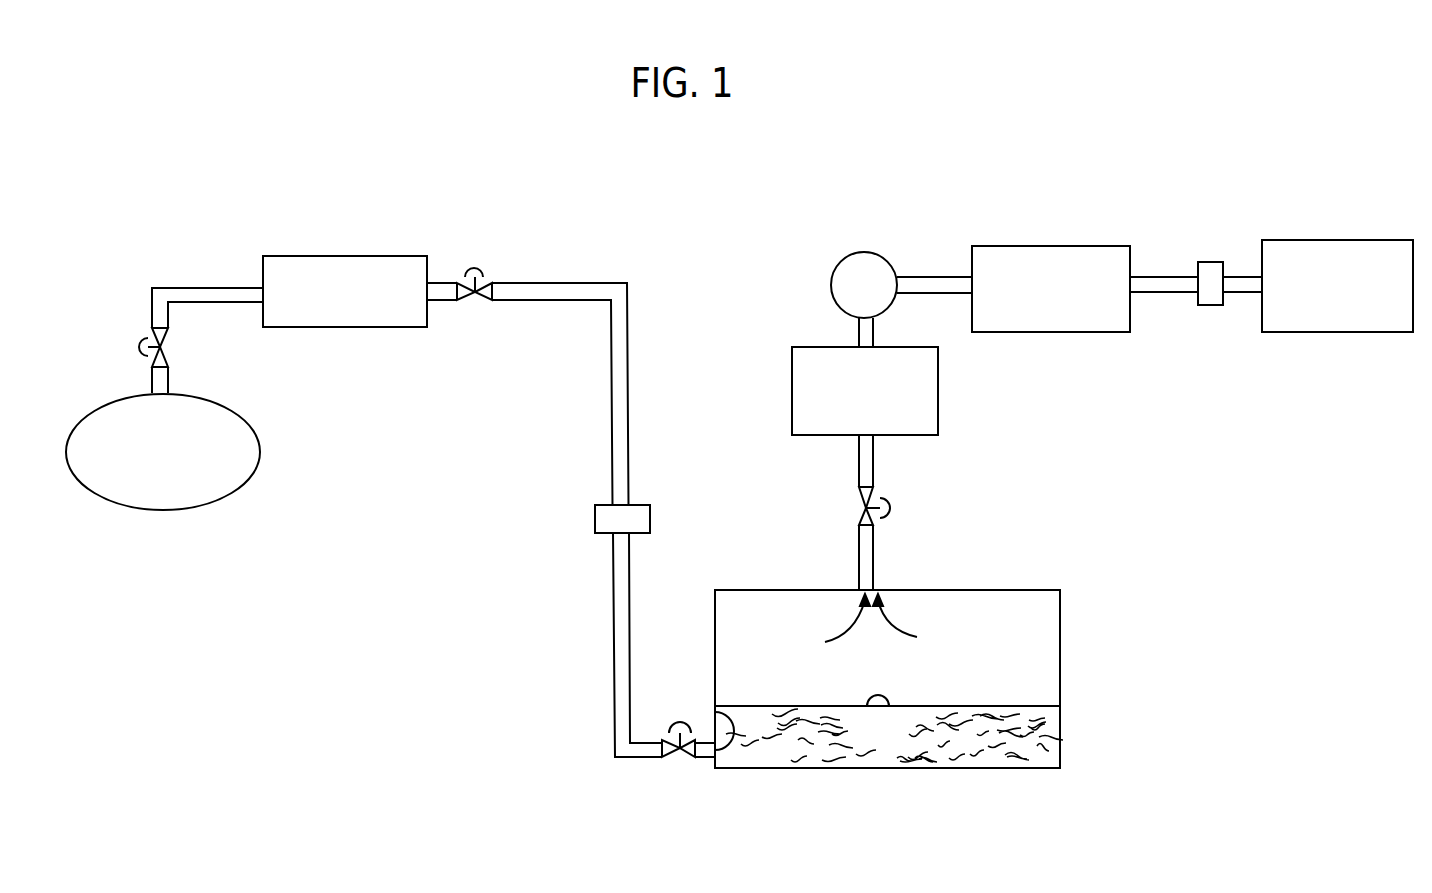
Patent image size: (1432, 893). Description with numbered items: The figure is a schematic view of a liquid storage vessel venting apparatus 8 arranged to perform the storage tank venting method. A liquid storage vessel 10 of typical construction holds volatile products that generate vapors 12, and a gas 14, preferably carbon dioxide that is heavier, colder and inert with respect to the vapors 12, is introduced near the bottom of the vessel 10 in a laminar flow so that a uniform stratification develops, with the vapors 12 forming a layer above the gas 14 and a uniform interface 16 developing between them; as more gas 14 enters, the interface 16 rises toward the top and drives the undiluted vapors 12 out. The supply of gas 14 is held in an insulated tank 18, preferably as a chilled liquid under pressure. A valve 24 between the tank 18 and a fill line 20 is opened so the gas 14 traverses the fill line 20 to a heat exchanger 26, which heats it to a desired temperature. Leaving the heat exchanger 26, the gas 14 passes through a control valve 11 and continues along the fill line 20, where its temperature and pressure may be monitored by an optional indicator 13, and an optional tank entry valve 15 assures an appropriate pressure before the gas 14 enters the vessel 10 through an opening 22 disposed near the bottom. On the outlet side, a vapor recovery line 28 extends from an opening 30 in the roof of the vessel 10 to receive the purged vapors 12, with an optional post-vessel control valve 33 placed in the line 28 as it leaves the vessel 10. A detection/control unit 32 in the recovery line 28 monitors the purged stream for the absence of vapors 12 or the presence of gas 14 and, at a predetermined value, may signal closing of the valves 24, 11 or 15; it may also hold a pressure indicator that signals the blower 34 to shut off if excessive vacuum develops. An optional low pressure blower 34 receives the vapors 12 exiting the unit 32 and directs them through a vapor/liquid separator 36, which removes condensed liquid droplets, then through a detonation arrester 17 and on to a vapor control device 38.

The liquid storage vessel venting apparatus 8 is at (978, 205).
The liquid storage vessel 10 is at (1062, 662).
The control valve 11 is at (480, 265).
The vapors 12 is at (988, 628).
The indicator 13 is at (640, 505).
The gas 14 is at (975, 755).
The tank entry valve 15 is at (680, 750).
The interface 16 is at (836, 760).
The detonation arrester 17 is at (1212, 260).
The insulated tank 18 is at (237, 492).
The fill line 20 is at (192, 285).
The opening 22 is at (715, 712).
The valve 24 is at (160, 347).
The heat exchanger 26 is at (398, 255).
The vapor recovery line 28 is at (877, 553).
The opening 30 is at (858, 588).
The detection/control unit 32 is at (940, 408).
The post-vessel control valve 33 is at (890, 507).
The low pressure blower 34 is at (870, 250).
The vapor/liquid separator 36 is at (1102, 245).
The vapor control device 38 is at (1365, 240).